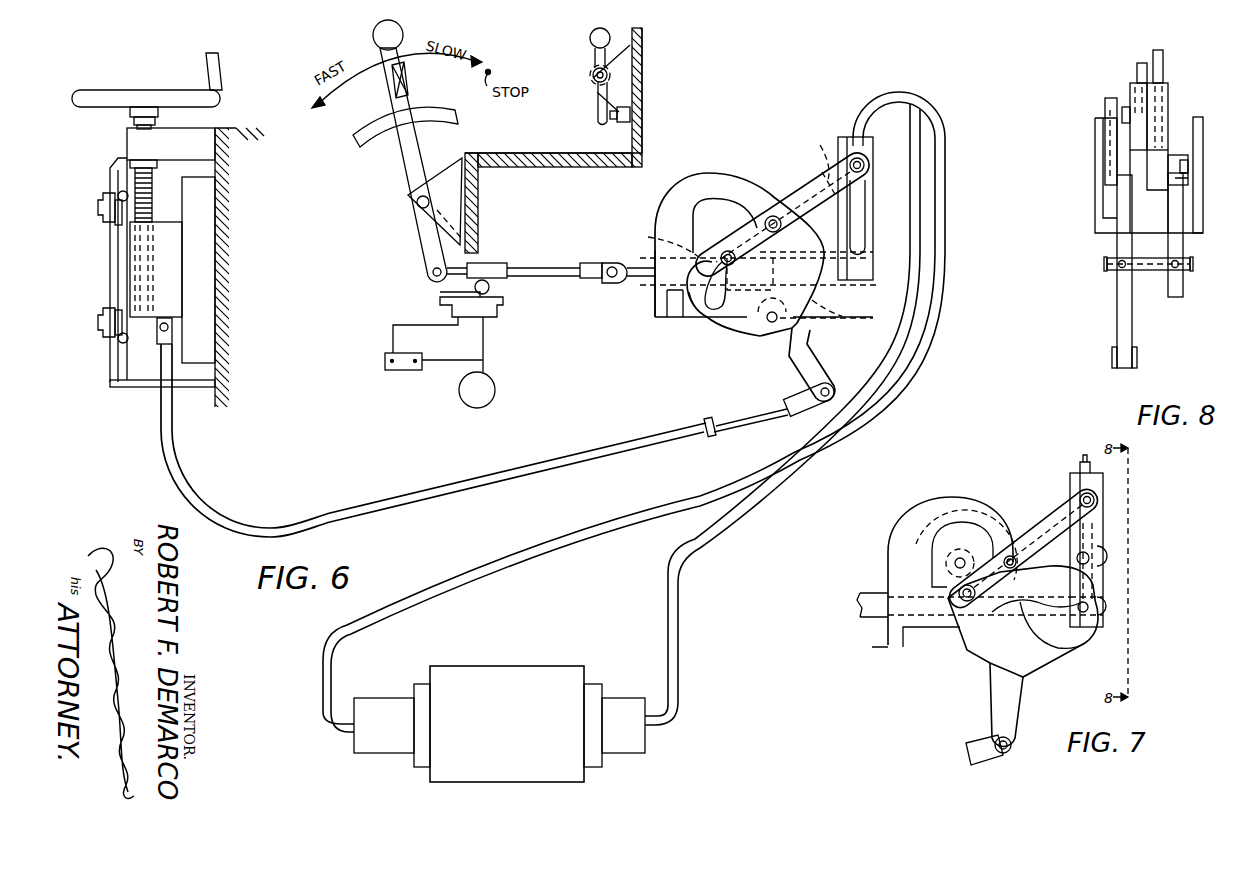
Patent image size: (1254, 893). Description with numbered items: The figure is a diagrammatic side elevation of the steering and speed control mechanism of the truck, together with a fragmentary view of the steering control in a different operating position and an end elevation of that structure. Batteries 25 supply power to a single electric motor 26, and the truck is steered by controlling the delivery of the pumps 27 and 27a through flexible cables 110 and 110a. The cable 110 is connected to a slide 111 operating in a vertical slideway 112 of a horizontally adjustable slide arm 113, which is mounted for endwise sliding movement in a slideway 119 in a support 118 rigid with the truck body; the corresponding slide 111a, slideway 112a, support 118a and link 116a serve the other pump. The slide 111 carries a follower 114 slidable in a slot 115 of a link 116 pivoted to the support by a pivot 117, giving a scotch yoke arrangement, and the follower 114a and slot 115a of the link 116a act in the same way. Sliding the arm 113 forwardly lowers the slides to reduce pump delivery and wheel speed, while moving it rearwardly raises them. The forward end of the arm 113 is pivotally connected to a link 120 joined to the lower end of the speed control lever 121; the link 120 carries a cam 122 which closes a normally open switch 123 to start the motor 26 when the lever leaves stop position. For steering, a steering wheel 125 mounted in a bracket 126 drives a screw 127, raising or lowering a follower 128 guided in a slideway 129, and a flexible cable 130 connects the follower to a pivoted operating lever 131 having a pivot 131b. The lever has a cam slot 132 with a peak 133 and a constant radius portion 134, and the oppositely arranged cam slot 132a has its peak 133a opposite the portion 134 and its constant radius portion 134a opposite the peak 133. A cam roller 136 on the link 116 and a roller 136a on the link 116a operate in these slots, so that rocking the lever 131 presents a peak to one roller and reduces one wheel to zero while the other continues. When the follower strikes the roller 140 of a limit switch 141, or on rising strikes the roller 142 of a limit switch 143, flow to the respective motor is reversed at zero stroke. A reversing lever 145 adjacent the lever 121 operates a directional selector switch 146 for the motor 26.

In FIG. 6, the batteries 25 is at (391, 370).
In FIG. 6, the electric motor 26 is at (496, 395).
In FIG. 6, the pump 27 is at (625, 703).
In FIG. 6, the pump 27a is at (386, 705).
In FIG. 6, the flexible cable 110 is at (947, 226).
In FIG. 8, the flexible cable 110 is at (1137, 72).
In FIG. 8, the flexible cable 110a is at (1163, 66).
In FIG. 6, the slide 111 is at (852, 142).
In FIG. 7, the slide 111 is at (1071, 486).
In FIG. 8, the slide 111 is at (1125, 104).
In FIG. 7, the slide 111a is at (1092, 542).
In FIG. 8, the slide 111a is at (1172, 160).
In FIG. 6, the vertical slideway 112 is at (874, 212).
In FIG. 7, the vertical slideway 112 is at (1086, 544).
In FIG. 8, the vertical slideway 112 is at (1132, 155).
In FIG. 8, the vertical slideway 112a is at (1168, 110).
In FIG. 6, the slide arm 113 is at (853, 275).
In FIG. 6, the follower 114 is at (816, 153).
In FIG. 8, the follower 114 is at (1122, 108).
In FIG. 7, the follower 114a is at (1094, 577).
In FIG. 8, the follower 114a is at (1185, 168).
In FIG. 6, the slot 115 is at (814, 174).
In FIG. 7, the slot 115a is at (1106, 553).
In FIG. 6, the link 116 is at (814, 190).
In FIG. 7, the link 116 is at (1052, 508).
In FIG. 8, the link 116 is at (1105, 106).
In FIG. 7, the link 116a is at (1100, 566).
In FIG. 8, the link 116a is at (1186, 178).
In FIG. 6, the pivot 117 is at (780, 214).
In FIG. 6, the support 118 is at (750, 176).
In FIG. 7, the support 118 is at (963, 572).
In FIG. 8, the support 118 is at (1095, 223).
In FIG. 8, the support 118a is at (1197, 226).
In FIG. 6, the slideway 119 is at (655, 292).
In FIG. 6, the link 120 is at (524, 278).
In FIG. 6, the speed control lever 121 is at (422, 252).
In FIG. 6, the cam 122 is at (488, 262).
In FIG. 6, the switch 123 is at (505, 302).
In FIG. 6, the steering wheel 125 is at (88, 92).
In FIG. 6, the bracket 126 is at (180, 146).
In FIG. 6, the screw 127 is at (135, 183).
In FIG. 6, the follower 128 is at (170, 253).
In FIG. 6, the slideway 129 is at (198, 290).
In FIG. 6, the flexible cable 130 is at (160, 365).
In FIG. 6, the operating lever 131 is at (797, 362).
In FIG. 8, the operating lever 131 is at (1117, 323).
In FIG. 6, the pivot 131b is at (768, 330).
In FIG. 8, the pivot 131b is at (1107, 268).
In FIG. 6, the cam slot 132 is at (690, 312).
In FIG. 6, the cam slot 132a is at (648, 235).
In FIG. 7, the cam slot 132a is at (988, 507).
In FIG. 6, the peak 133 is at (874, 251).
In FIG. 7, the peak 133 is at (1096, 620).
In FIG. 6, the peak 133a is at (652, 256).
In FIG. 6, the constant radius portion 134 is at (697, 345).
In FIG. 7, the constant radius portion 134 is at (1068, 649).
In FIG. 6, the constant radius portion 134a is at (820, 311).
In FIG. 7, the constant radius portion 134a is at (1110, 605).
In FIG. 6, the cam roller 136 is at (732, 251).
In FIG. 7, the cam roller 136 is at (977, 627).
In FIG. 7, the cam roller 136a is at (945, 527).
In FIG. 6, the roller 140 is at (118, 342).
In FIG. 6, the limit switch 141 is at (100, 310).
In FIG. 6, the roller 142 is at (118, 196).
In FIG. 6, the limit switch 143 is at (100, 222).
In FIG. 6, the reversing lever 145 is at (594, 56).
In FIG. 6, the directional selector switch 146 is at (622, 125).